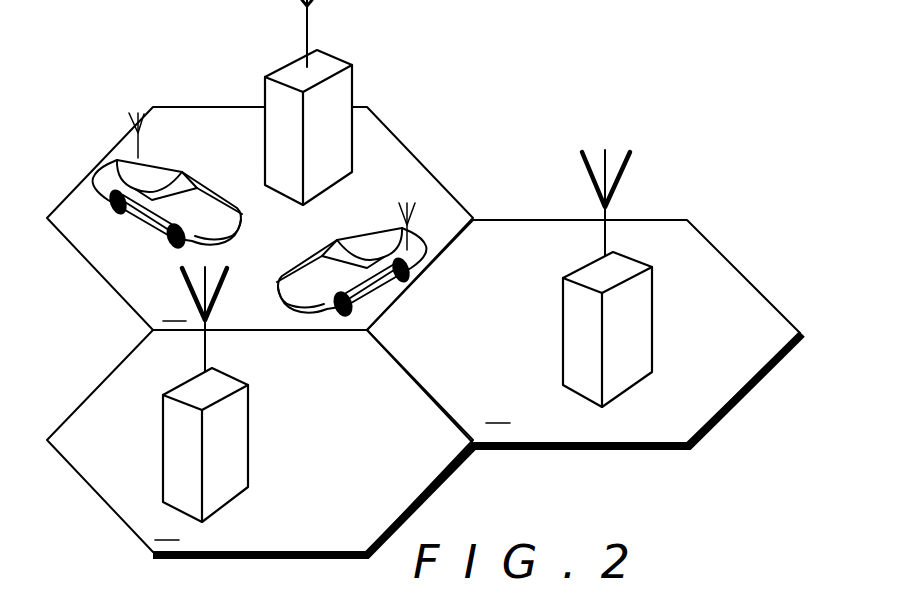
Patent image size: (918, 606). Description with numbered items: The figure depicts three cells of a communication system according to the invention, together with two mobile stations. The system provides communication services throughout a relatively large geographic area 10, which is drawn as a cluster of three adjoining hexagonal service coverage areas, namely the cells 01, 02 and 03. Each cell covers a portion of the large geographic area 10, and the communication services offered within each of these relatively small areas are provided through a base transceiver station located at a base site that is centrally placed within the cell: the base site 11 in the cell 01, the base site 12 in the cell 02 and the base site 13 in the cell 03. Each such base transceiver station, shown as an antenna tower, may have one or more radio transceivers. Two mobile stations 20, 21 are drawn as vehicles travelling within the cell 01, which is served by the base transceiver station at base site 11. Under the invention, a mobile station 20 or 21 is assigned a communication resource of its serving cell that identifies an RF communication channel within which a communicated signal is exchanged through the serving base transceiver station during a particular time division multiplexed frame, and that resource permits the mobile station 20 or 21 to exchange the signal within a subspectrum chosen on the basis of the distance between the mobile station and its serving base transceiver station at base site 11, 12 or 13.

The geographic area 10 is at (526, 103).
The cell 01 is at (174, 310).
The cell 02 is at (498, 412).
The cell 03 is at (167, 529).
The base site 11 is at (352, 100).
The base site 12 is at (563, 280).
The base site 13 is at (248, 394).
The mobile station 20 is at (165, 172).
The mobile station 21 is at (372, 228).